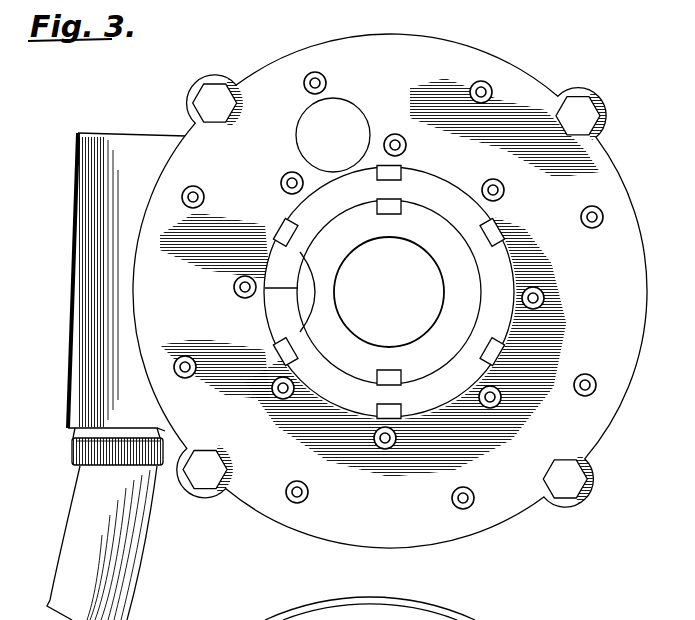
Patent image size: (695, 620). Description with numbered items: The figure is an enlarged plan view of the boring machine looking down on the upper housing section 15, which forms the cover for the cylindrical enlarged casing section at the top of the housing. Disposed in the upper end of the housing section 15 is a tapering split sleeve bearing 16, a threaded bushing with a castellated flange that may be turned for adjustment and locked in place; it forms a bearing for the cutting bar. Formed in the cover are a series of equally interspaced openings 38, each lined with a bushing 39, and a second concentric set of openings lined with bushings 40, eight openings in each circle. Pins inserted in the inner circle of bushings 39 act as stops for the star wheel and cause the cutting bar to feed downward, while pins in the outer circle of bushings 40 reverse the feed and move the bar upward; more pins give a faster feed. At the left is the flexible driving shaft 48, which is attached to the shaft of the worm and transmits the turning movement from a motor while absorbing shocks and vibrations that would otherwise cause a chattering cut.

The upper housing section 15 is at (597, 177).
The tapering split sleeve bearing 16 is at (478, 218).
The openings 38 is at (295, 410).
The bushings 39 is at (283, 400).
The bushings 40 is at (308, 494).
The flexible driving shaft 48 is at (90, 482).